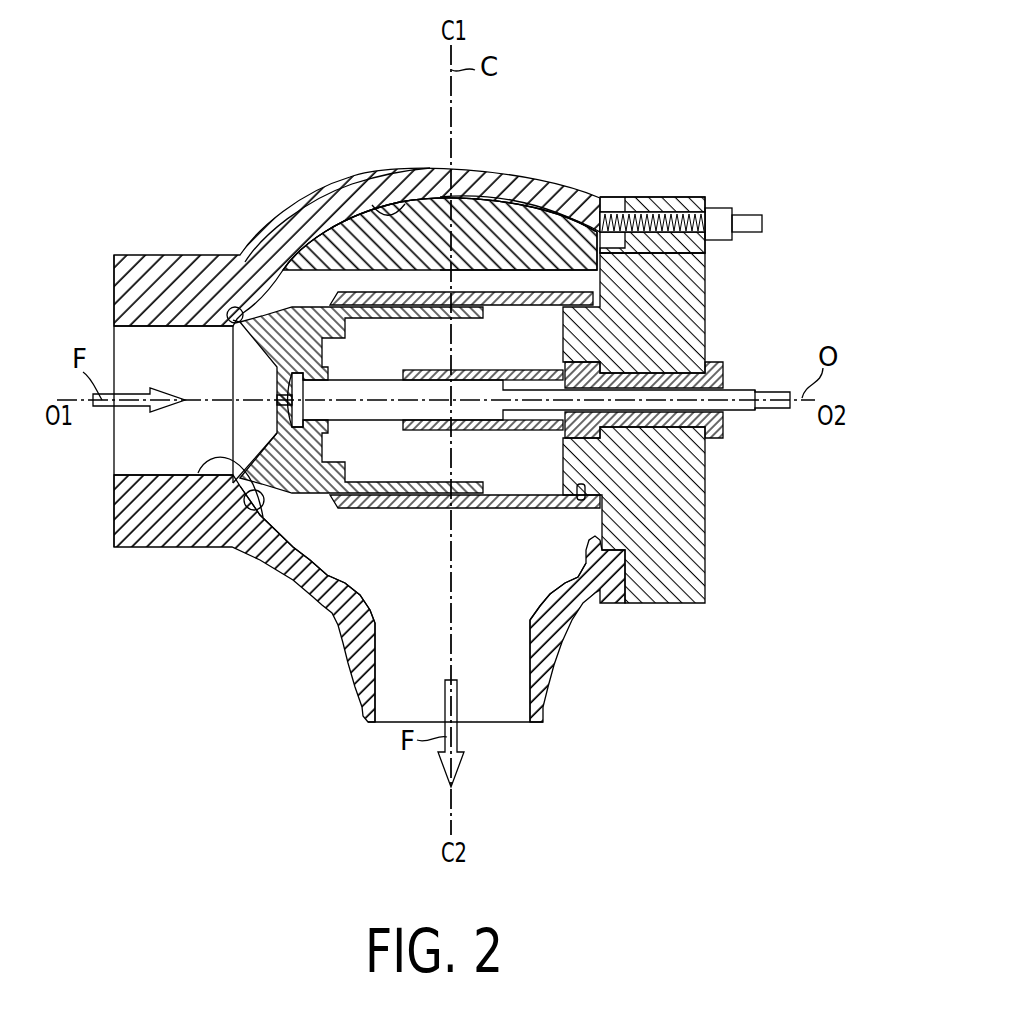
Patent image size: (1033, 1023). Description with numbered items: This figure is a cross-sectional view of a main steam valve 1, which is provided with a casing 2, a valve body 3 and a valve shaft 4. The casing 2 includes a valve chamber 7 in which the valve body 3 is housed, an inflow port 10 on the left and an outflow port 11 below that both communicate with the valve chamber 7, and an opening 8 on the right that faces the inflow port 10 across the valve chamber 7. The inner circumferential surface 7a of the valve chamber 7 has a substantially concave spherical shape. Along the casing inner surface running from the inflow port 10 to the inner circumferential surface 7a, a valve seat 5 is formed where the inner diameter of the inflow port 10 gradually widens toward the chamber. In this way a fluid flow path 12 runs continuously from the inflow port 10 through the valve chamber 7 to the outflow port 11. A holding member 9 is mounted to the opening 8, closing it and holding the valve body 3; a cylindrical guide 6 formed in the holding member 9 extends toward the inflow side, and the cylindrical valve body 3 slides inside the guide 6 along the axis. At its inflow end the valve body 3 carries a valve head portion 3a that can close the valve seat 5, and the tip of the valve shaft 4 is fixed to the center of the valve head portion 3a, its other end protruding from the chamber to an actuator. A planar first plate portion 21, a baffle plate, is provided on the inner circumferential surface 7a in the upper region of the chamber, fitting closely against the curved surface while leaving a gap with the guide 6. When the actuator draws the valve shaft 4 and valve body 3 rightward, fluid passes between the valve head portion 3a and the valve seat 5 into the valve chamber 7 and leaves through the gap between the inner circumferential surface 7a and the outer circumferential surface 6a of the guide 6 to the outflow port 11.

The main steam valve 1 is at (657, 102).
The casing 2 is at (150, 273).
The valve body 3 is at (363, 318).
The valve head portion 3a is at (227, 463).
The valve shaft 4 is at (480, 413).
The valve seat 5 is at (217, 323).
The guide 6 is at (600, 303).
The outer circumferential surface of the guide 6a is at (527, 290).
The valve chamber 7 is at (288, 282).
The inner circumferential surface 7a is at (382, 212).
The opening 8 is at (537, 507).
The holding member 9 is at (685, 568).
The inflow port 10 is at (140, 342).
The outflow port 11 is at (498, 702).
The fluid flow path 12 is at (390, 553).
The first plate portion 21 is at (497, 222).